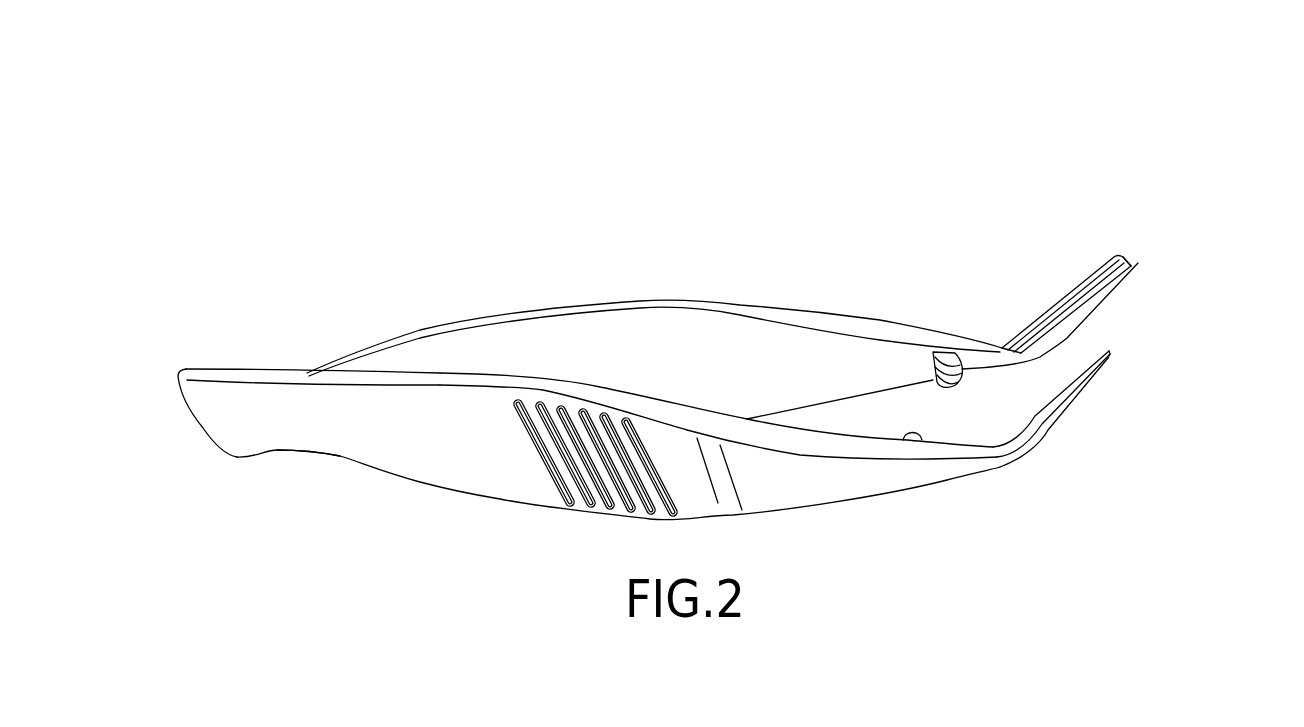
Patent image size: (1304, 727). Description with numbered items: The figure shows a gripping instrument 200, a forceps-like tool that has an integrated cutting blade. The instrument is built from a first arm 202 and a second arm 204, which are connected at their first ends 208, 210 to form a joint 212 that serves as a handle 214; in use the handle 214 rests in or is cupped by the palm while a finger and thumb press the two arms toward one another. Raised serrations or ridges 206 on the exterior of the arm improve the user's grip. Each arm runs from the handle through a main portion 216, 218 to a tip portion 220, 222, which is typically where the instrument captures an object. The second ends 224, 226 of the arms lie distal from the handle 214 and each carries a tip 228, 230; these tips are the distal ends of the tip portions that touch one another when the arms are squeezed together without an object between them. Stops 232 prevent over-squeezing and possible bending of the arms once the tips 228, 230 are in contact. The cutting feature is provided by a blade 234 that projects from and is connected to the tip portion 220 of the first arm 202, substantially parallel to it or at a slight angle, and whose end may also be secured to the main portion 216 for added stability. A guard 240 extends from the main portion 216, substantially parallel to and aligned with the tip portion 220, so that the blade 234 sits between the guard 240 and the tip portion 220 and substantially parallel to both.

The gripping instrument 200 is at (983, 180).
The first arm 202 is at (692, 328).
The second arm 204 is at (757, 493).
The ridges 206 is at (562, 492).
The first end 208 is at (218, 340).
The first end 210 is at (283, 497).
The joint 212 is at (307, 375).
The handle 214 is at (212, 418).
The main portion 216 is at (515, 333).
The bottom surface 218 is at (402, 455).
The tip portion 220 is at (1080, 320).
The tip portion 222 is at (1050, 410).
The second end 224 is at (1157, 235).
The second end 226 is at (1038, 487).
The tip 228 is at (1138, 263).
The tip 230 is at (1110, 355).
The stops 232 is at (940, 352).
The blade 234 is at (1090, 300).
The guard 240 is at (1083, 282).